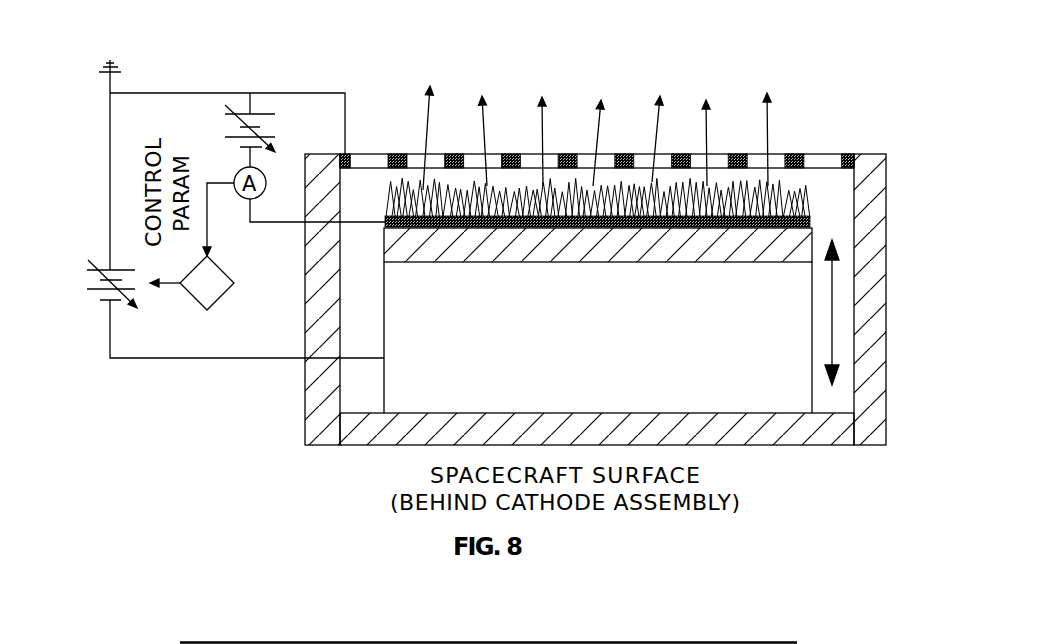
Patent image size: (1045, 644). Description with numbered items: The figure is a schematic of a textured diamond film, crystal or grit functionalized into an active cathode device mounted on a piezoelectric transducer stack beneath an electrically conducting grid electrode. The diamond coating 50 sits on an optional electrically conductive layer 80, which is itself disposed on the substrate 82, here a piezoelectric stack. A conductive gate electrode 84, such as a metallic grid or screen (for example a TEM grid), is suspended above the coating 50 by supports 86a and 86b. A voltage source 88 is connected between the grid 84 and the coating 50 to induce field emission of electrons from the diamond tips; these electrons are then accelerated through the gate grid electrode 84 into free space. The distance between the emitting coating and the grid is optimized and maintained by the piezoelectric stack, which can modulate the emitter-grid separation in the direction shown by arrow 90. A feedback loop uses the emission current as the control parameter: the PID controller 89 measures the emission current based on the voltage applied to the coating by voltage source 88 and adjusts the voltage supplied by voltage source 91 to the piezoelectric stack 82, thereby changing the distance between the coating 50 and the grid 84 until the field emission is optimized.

The coating 50 is at (808, 212).
The electrically conductive layer 80 is at (812, 236).
The substrate 82 is at (737, 377).
The conductive gate electrode 84 is at (800, 152).
The support 86a is at (868, 421).
The support 86b is at (322, 422).
The voltage source 88 is at (262, 93).
The PID controller 89 is at (45, 305).
The arrow 90 is at (833, 297).
The voltage source 91 is at (200, 312).